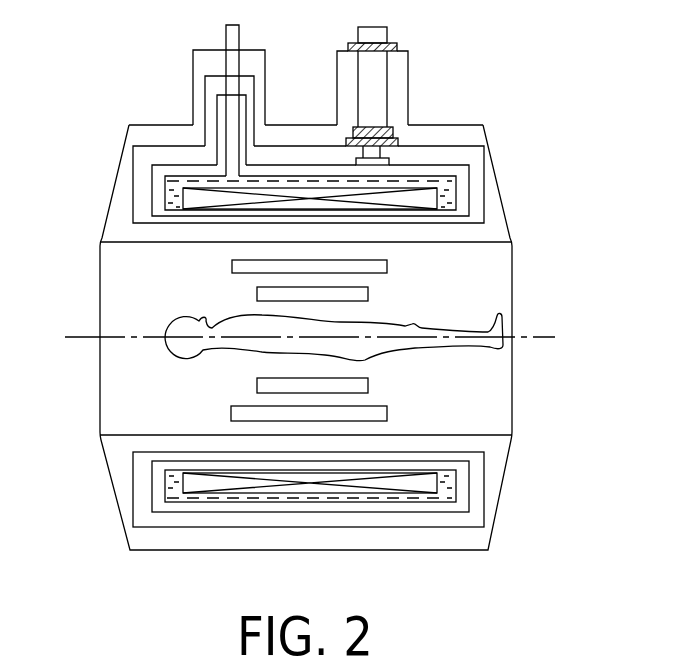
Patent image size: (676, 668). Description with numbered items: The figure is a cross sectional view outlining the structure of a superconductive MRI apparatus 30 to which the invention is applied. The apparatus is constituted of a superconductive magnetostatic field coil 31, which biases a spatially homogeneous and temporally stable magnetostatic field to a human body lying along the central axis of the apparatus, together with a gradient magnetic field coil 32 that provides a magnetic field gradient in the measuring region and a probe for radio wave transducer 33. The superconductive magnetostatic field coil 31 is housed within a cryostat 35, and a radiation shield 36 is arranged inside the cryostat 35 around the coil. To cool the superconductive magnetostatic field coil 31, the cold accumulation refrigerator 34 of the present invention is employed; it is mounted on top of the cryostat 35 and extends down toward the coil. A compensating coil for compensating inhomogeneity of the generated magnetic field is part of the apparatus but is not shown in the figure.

The superconductive MRI apparatus 30 is at (498, 87).
The superconductive magnetostatic field coil 31 is at (450, 197).
The gradient magnetic field coil 32 is at (387, 268).
The probe for radio wave transducer 33 is at (368, 386).
The cold accumulation refrigerator 34 is at (390, 88).
The cryostat 35 is at (122, 147).
The radiation shield 36 is at (152, 185).